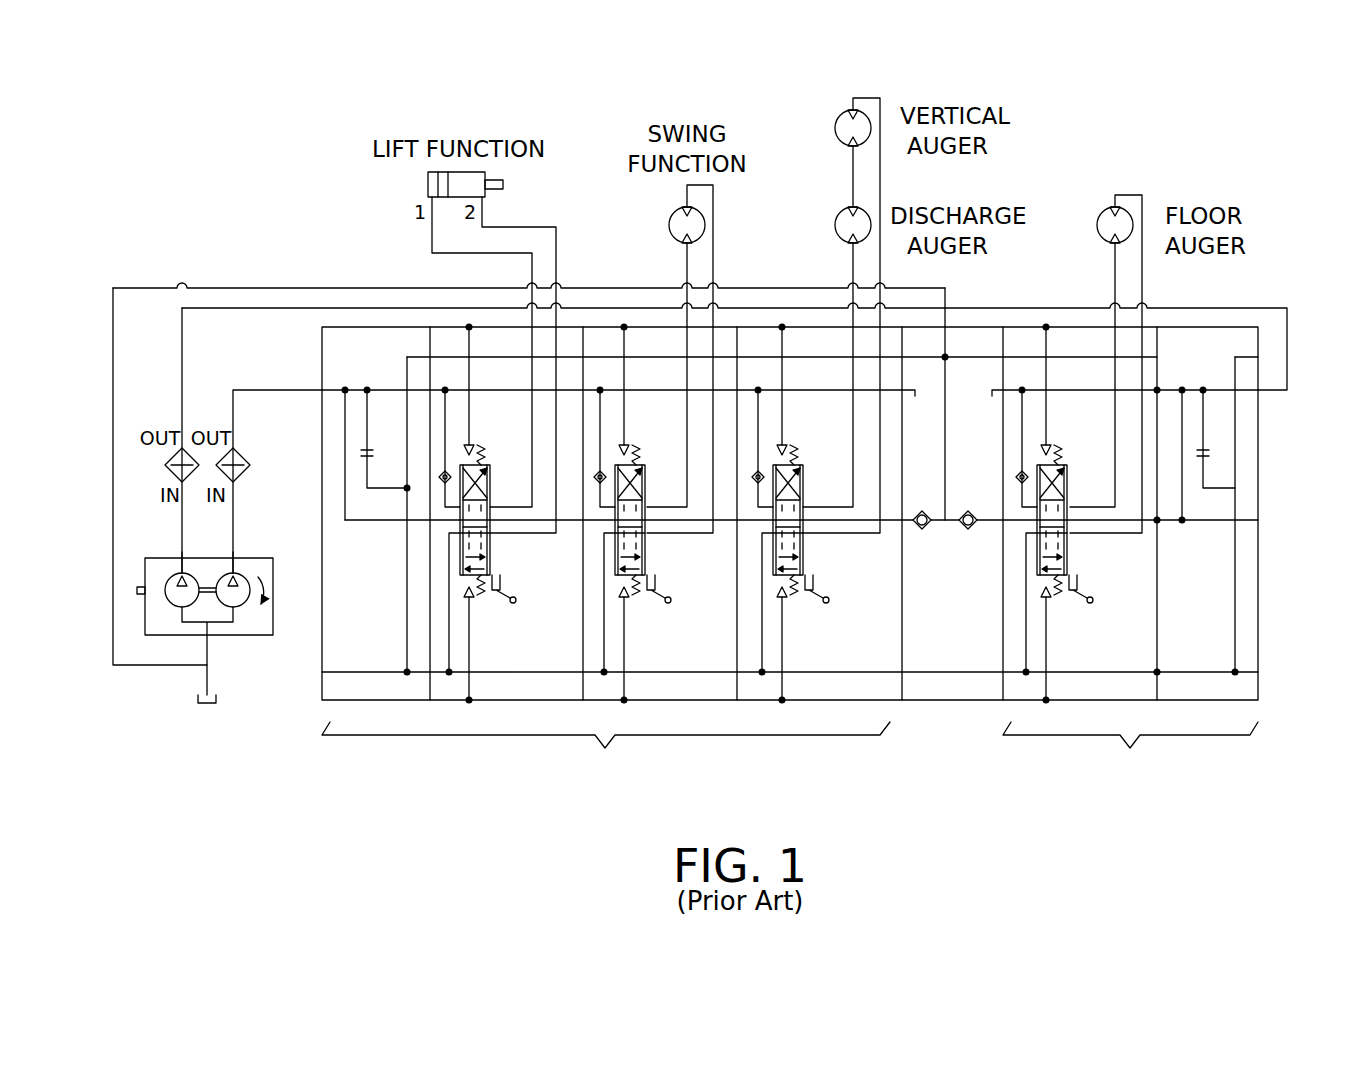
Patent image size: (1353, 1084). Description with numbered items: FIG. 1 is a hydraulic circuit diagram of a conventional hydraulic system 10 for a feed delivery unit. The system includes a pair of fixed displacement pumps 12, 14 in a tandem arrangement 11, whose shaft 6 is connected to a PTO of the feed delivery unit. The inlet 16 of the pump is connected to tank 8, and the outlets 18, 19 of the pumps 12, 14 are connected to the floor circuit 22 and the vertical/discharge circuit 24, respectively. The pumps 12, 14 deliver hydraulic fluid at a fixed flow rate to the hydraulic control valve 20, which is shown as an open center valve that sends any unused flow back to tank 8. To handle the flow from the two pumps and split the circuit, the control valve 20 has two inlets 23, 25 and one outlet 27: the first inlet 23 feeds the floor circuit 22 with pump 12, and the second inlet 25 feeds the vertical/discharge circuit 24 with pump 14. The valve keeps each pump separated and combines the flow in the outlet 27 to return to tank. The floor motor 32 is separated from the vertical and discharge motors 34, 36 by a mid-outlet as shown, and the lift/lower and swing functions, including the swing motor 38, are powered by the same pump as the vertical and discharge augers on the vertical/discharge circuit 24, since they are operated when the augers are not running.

The shaft 6 is at (139, 599).
The tank 8 is at (208, 707).
The hydraulic system 10 is at (1211, 132).
The tandem arrangement 11 is at (250, 636).
The pump 12 is at (166, 577).
The pump 14 is at (250, 568).
The inlet 16 is at (217, 642).
The outlet 18 is at (146, 541).
The outlet 19 is at (240, 545).
The hydraulic control valve 20 is at (937, 754).
The floor circuit 22 is at (1130, 556).
The first inlet 23 is at (1270, 400).
The vertical/discharge circuit 24 is at (663, 556).
The second inlet 25 is at (318, 395).
The outlet 27 is at (949, 323).
The floor motor 32 is at (1087, 350).
The vertical motor 34 is at (835, 128).
The discharge motor 36 is at (835, 226).
The motor 38 is at (669, 226).